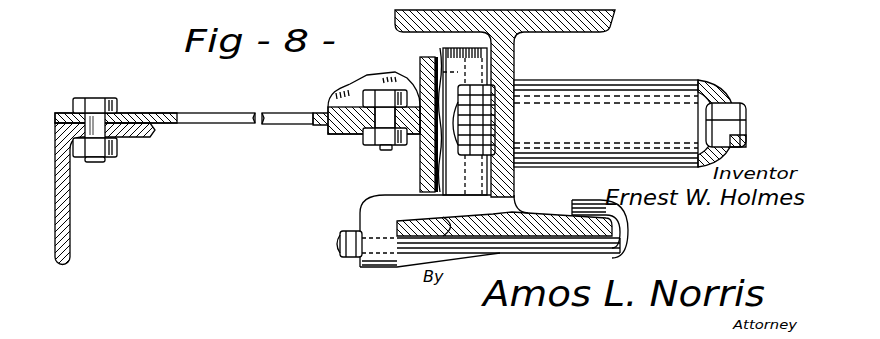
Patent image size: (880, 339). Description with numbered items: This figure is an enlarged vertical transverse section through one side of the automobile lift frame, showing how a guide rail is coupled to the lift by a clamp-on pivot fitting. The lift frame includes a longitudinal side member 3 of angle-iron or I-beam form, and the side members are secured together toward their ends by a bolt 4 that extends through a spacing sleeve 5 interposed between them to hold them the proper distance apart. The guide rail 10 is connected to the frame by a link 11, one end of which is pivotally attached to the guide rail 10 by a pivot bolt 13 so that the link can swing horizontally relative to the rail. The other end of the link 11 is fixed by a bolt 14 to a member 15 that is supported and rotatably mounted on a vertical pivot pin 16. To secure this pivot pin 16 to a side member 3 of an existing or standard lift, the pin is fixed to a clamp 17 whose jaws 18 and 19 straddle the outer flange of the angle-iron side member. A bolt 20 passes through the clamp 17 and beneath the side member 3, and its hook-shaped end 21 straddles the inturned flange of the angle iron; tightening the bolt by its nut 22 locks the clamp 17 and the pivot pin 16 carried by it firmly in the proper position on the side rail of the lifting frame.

The side member 3 is at (515, 63).
The bolt 4 is at (740, 110).
The spacing sleeve 5 is at (660, 89).
The guide rail 10 is at (70, 223).
The link 11 is at (219, 118).
The pivot bolt 13 is at (101, 98).
The bolt 14 is at (365, 128).
The member 15 is at (425, 163).
The vertical pivot pin 16 is at (449, 50).
The clamp 17 is at (382, 203).
The jaw 18 is at (478, 203).
The jaw 19 is at (415, 263).
The bolt 20 is at (445, 242).
The hook-shaped end 21 is at (620, 237).
The nut 22 is at (353, 257).